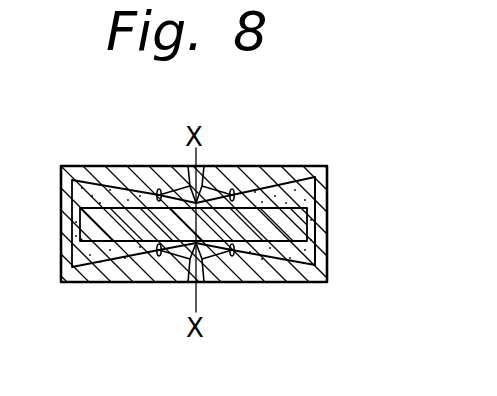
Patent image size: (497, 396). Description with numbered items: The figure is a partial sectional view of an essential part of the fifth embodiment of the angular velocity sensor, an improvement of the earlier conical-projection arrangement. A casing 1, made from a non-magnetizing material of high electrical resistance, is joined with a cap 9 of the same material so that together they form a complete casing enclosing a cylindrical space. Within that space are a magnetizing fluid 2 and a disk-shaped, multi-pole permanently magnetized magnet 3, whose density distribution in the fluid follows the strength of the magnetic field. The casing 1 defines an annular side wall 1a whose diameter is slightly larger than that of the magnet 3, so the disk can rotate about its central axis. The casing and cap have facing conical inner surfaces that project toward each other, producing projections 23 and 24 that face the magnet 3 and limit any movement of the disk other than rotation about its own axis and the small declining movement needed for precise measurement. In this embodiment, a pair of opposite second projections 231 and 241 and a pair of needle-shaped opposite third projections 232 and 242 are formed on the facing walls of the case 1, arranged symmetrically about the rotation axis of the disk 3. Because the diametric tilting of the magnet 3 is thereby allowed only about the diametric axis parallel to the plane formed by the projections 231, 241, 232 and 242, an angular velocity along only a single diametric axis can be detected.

The casing 1 is at (322, 270).
The annular side wall 1a is at (328, 196).
The magnetizing fluid 2 is at (81, 186).
The permanently magnetized magnet 3 is at (293, 178).
The cap 9 is at (215, 176).
The projection 23 is at (175, 178).
The second projection 231 is at (156, 190).
The third projection 232 is at (236, 190).
The projection 24 is at (182, 262).
The second projection 241 is at (157, 256).
The third projection 242 is at (233, 257).